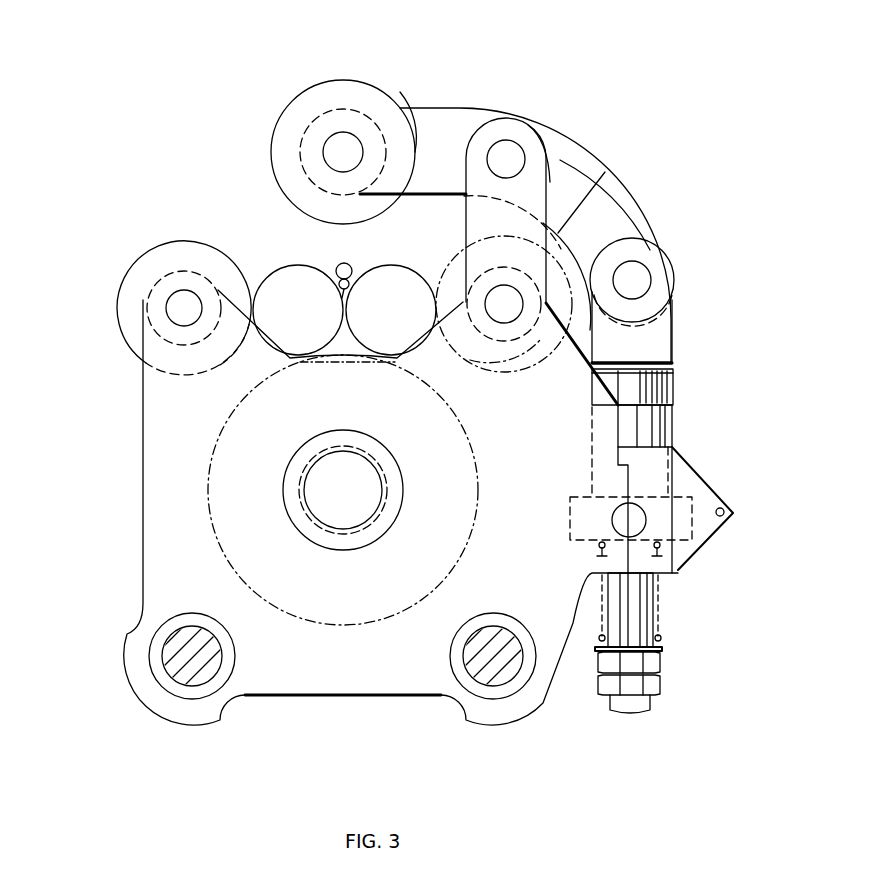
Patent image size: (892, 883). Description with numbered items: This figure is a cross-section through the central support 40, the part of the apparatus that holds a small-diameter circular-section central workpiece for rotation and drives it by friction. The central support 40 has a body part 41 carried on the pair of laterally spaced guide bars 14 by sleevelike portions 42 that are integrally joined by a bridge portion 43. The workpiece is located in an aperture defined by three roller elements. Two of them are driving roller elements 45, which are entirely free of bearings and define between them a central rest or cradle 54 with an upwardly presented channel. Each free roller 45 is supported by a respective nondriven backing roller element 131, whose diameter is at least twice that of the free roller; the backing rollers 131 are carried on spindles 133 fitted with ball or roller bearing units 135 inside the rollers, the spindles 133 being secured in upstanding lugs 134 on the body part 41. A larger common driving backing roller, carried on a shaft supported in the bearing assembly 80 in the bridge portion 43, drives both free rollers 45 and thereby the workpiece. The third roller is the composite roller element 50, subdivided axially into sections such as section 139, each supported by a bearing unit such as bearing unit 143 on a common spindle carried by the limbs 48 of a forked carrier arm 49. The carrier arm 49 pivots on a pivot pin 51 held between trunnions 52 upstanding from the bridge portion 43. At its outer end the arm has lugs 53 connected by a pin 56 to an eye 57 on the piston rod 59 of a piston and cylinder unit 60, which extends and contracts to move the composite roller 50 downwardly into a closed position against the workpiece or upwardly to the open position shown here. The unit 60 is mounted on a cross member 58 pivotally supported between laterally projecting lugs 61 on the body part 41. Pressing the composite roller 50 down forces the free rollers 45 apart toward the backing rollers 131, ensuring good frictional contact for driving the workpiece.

The guide bars 14 is at (213, 648).
The central support 40 is at (293, 697).
The body part 41 is at (143, 415).
The sleevelike portions 42 is at (168, 707).
The bridge portion 43 is at (343, 490).
The driving roller elements 45 is at (292, 290).
The limbs 48 is at (375, 152).
The forked carrier arm 49 is at (480, 108).
The composite roller element 50 is at (400, 96).
The pivot pin 51 is at (512, 148).
The trunnions 52 is at (565, 168).
The lugs 53 is at (608, 197).
The central rest or cradle 54 is at (342, 300).
The pin 56 is at (640, 270).
The eye 57 is at (676, 322).
The cross member 58 is at (690, 500).
The piston rod 59 is at (640, 353).
The piston and cylinder unit 60 is at (670, 427).
The lugs 61 is at (597, 575).
The bearing assembly 80 is at (369, 531).
The backing roller elements 131 is at (212, 242).
The spindles 133 is at (170, 303).
The lugs 134 is at (145, 330).
The ball or roller bearing units 135 is at (193, 348).
The roller section 139 is at (360, 88).
The ball or roller bearing unit 143 is at (413, 181).